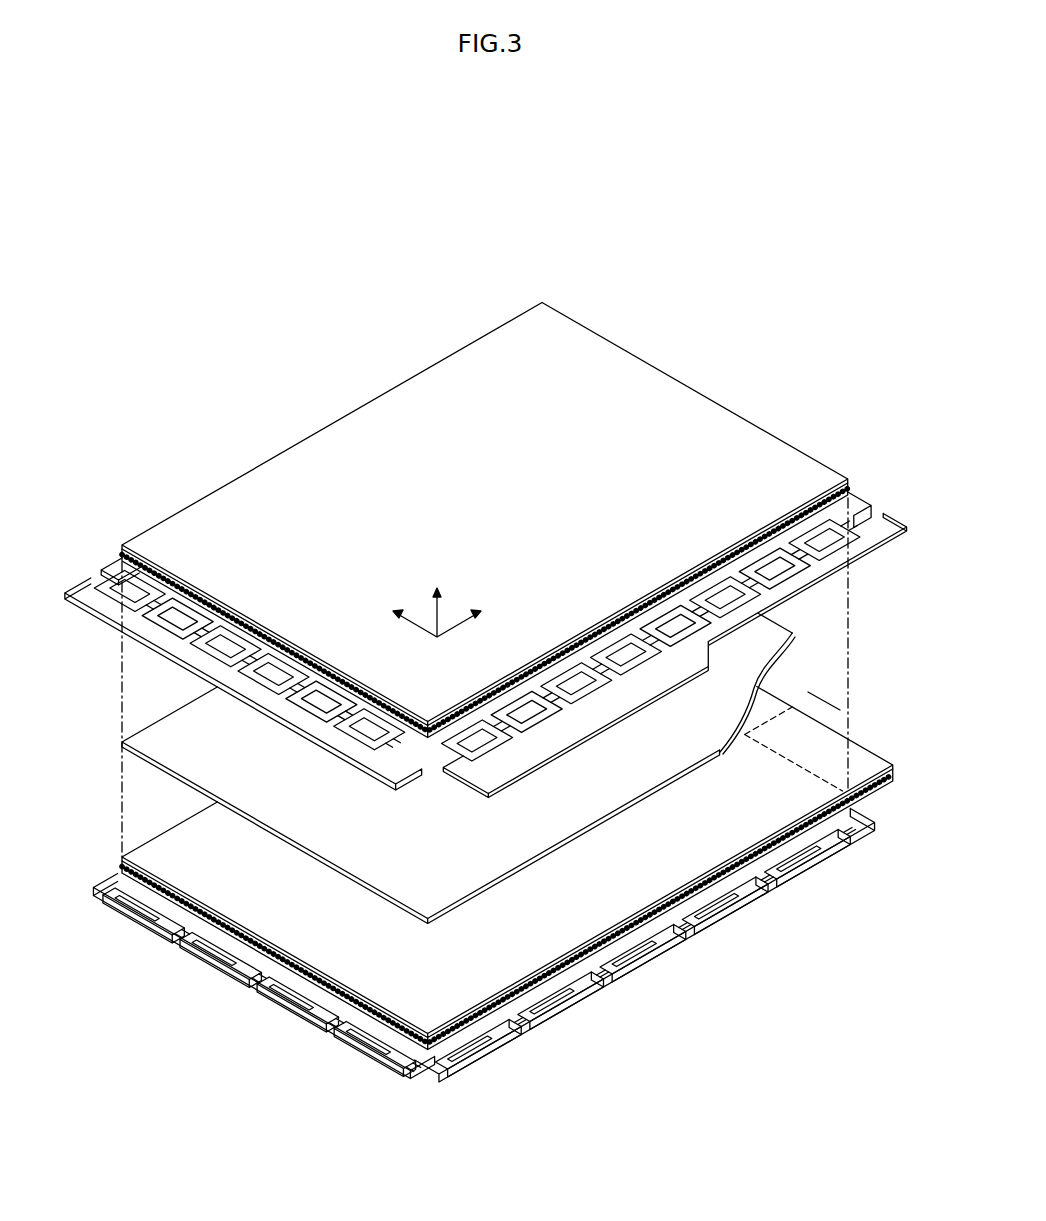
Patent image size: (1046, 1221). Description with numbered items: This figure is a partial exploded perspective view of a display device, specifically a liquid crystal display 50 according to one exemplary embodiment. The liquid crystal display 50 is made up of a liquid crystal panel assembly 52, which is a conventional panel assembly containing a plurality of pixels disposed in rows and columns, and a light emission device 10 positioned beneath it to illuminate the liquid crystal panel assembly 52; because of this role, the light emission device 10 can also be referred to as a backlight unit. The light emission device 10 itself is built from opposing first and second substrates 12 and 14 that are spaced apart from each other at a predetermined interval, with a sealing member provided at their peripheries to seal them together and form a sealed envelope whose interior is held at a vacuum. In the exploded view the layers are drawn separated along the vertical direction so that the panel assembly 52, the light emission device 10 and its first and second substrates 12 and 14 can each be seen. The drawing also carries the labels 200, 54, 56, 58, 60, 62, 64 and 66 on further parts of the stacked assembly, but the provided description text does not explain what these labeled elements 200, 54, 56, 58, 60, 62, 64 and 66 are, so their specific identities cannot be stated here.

The display device 200 is at (414, 253).
The liquid crystal display 50 is at (331, 414).
The upper substrate 56 is at (631, 382).
The adhesive layer 54 is at (857, 504).
The first antenna pattern strip 58 is at (82, 590).
The second antenna pattern strip 60 is at (887, 527).
The liquid crystal panel assembly 52 is at (170, 720).
The bent connecting portion 66 is at (814, 702).
The light emission device 10 is at (148, 830).
The second substrate 14 is at (868, 762).
The first substrate 12 is at (880, 812).
The second lower electrode pattern 62 is at (627, 972).
The first lower electrode pattern 64 is at (273, 993).